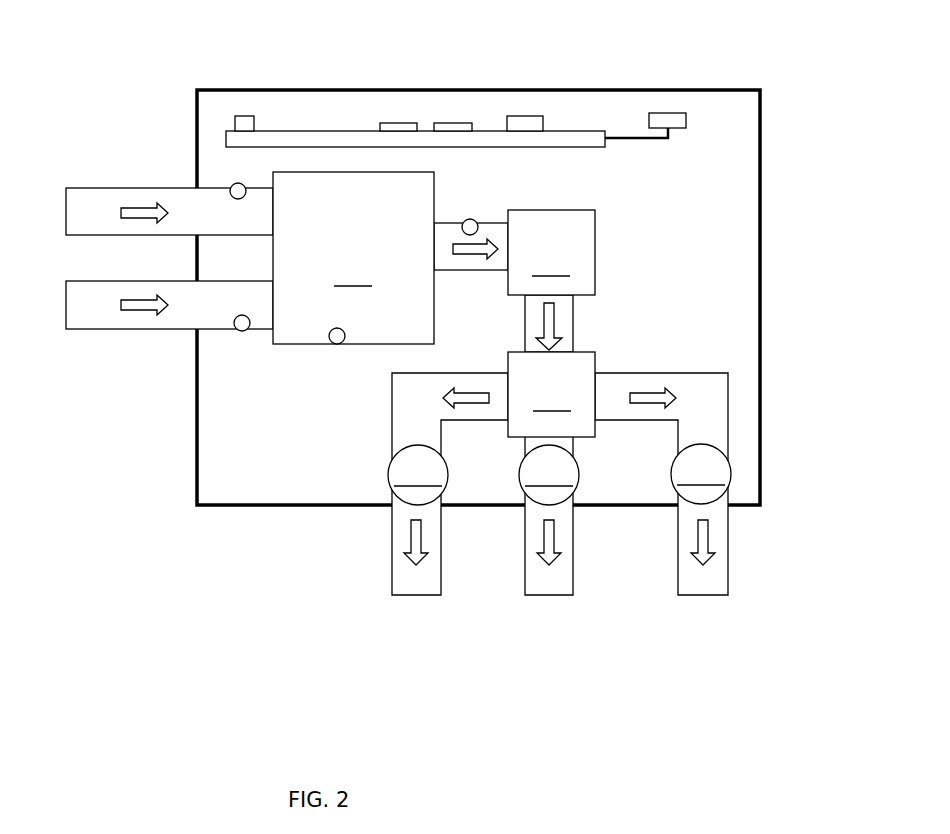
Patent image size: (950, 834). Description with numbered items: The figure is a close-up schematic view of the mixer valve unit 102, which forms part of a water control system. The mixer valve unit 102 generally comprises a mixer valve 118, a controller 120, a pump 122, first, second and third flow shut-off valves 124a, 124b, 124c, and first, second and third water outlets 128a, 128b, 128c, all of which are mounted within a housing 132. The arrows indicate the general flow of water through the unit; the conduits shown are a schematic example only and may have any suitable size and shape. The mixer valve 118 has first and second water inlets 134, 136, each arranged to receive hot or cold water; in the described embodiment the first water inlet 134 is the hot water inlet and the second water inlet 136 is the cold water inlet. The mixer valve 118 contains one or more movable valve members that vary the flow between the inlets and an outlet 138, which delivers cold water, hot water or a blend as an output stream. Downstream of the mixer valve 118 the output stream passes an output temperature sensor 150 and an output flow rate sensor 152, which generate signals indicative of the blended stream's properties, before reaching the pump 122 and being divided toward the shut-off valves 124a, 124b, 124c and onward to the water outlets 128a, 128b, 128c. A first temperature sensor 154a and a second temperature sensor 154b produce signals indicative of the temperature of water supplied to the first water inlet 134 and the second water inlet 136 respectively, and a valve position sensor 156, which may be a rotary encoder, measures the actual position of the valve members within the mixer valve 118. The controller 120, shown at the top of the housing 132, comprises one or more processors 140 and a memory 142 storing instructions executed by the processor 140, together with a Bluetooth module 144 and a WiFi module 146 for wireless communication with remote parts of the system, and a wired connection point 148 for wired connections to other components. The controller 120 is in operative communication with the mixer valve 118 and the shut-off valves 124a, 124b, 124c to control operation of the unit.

The mixer valve unit 102 is at (92, 131).
The mixer valve 118 is at (353, 258).
The controller 120 is at (340, 107).
The pump 122 is at (551, 394).
The first flow shut-off valve 124a is at (418, 475).
The second flow shut-off valve 124b is at (549, 475).
The third flow shut-off valve 124c is at (701, 474).
The first water outlet 128a is at (415, 595).
The second water outlet 128b is at (550, 595).
The third water outlet 128c is at (705, 595).
The housing 132 is at (761, 198).
The first water inlet 134 is at (148, 188).
The second water inlet 136 is at (113, 330).
The outlet 138 is at (462, 272).
The processor 140 is at (402, 123).
The memory 142 is at (462, 123).
The Bluetooth module 144 is at (530, 116).
The WiFi module 146 is at (677, 113).
The wired connection point 148 is at (246, 116).
The output temperature sensor 150 is at (473, 219).
The output flow rate sensor 152 is at (551, 252).
The first temperature sensor 154a is at (232, 185).
The second temperature sensor 154b is at (238, 331).
The valve position sensor 156 is at (334, 344).